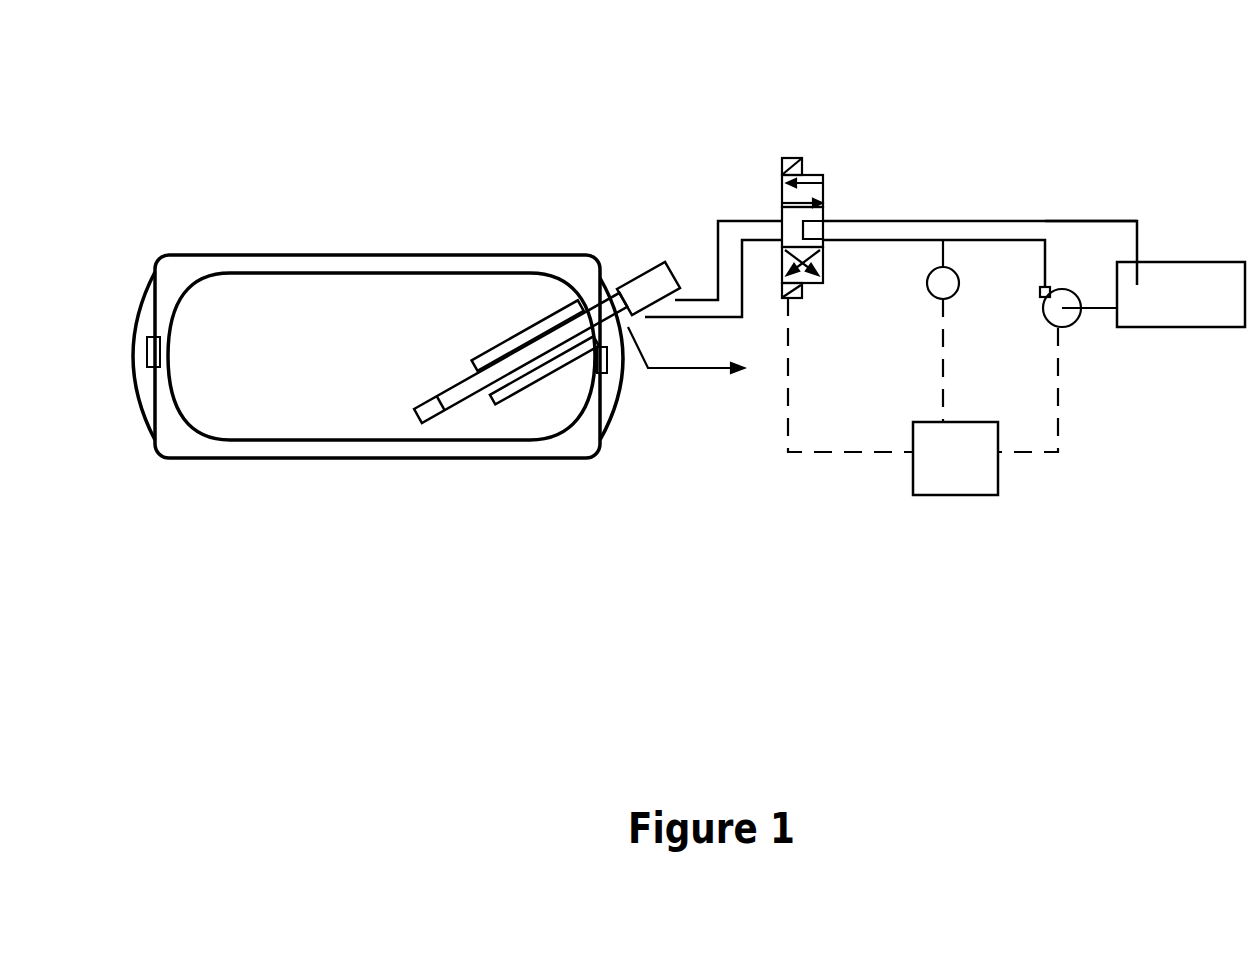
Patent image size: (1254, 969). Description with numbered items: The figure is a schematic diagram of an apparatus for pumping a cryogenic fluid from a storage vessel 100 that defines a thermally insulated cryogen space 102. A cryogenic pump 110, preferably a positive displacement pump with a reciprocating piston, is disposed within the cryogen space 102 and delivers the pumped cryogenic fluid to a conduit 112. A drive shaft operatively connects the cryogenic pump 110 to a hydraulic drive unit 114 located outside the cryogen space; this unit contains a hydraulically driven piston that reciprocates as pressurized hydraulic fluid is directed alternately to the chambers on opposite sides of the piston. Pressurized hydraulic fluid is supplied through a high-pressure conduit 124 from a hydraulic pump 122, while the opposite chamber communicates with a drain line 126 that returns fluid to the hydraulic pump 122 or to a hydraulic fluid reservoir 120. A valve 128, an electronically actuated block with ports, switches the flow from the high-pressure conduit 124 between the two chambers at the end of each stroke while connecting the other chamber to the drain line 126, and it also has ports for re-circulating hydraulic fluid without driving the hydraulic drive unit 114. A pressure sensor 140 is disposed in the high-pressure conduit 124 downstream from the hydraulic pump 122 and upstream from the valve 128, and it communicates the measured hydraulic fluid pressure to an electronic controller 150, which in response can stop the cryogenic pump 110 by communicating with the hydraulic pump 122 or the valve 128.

The storage vessel 100 is at (312, 460).
The cryogen space 102 is at (370, 378).
The cryogenic pump 110 is at (460, 372).
The conduit 112 is at (718, 372).
The hydraulic drive unit 114 is at (647, 273).
The hydraulic fluid reservoir 120 is at (1150, 313).
The hydraulic pump 122 is at (1060, 318).
The high-pressure conduit 124 is at (888, 242).
The drain line 126 is at (1095, 225).
The valve 128 is at (792, 158).
The pressure sensor 140 is at (950, 280).
The electronic controller 150 is at (988, 482).